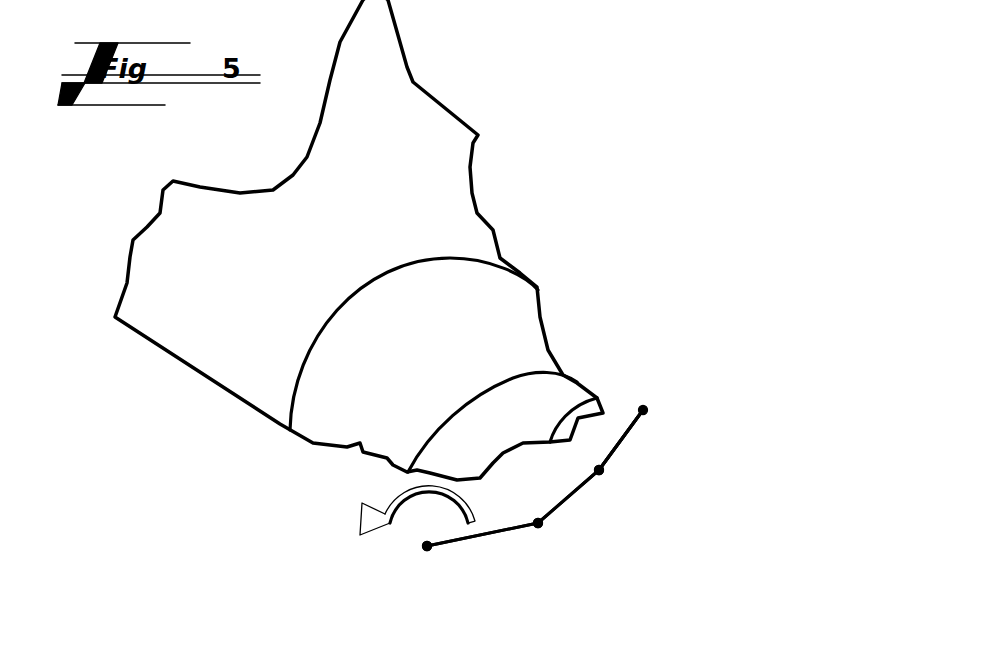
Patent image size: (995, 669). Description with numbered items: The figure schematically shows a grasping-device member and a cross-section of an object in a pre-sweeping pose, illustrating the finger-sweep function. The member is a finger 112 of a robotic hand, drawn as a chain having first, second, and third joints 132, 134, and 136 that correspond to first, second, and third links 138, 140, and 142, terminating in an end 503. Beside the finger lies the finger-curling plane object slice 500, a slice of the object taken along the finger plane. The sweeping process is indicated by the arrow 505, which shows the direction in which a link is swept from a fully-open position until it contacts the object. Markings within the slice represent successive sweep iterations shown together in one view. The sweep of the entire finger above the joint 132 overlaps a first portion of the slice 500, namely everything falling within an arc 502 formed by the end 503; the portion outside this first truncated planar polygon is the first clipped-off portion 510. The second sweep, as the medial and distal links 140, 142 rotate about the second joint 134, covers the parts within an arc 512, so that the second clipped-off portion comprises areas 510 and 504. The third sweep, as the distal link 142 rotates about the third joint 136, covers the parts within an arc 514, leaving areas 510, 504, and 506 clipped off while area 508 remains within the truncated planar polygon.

The finger-curling plane object slice 500 is at (512, 140).
The arc 502 is at (448, 258).
The end of the finger 503 is at (655, 406).
The labeled area 504 is at (414, 344).
The arrow on the arc 505 is at (405, 500).
The labeled area 506 is at (502, 422).
The labeled area 508 is at (563, 428).
The first clipped-off portion 510 is at (210, 290).
The arc 512 is at (555, 395).
The arc 514 is at (563, 410).
The finger 112 is at (658, 431).
The first joint 132 is at (430, 556).
The second joint 134 is at (547, 531).
The third joint 136 is at (608, 477).
The first link 138 is at (485, 542).
The second link 140 is at (572, 502).
The third link 142 is at (627, 440).